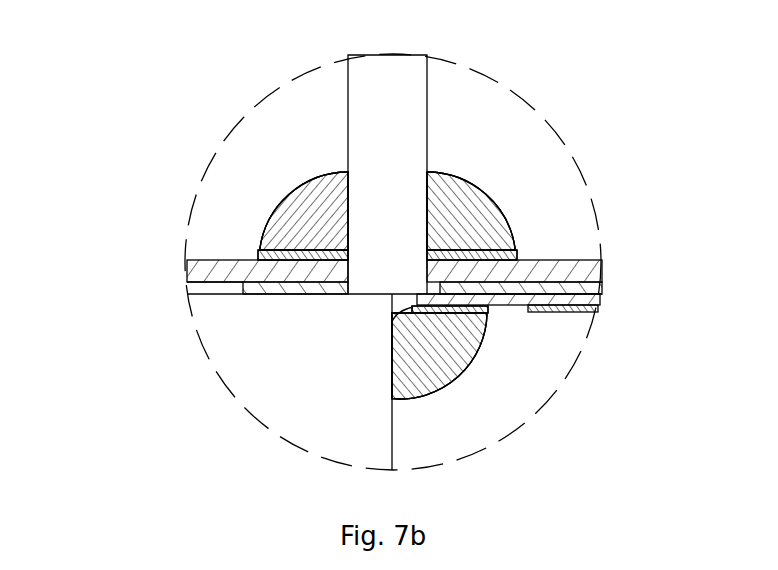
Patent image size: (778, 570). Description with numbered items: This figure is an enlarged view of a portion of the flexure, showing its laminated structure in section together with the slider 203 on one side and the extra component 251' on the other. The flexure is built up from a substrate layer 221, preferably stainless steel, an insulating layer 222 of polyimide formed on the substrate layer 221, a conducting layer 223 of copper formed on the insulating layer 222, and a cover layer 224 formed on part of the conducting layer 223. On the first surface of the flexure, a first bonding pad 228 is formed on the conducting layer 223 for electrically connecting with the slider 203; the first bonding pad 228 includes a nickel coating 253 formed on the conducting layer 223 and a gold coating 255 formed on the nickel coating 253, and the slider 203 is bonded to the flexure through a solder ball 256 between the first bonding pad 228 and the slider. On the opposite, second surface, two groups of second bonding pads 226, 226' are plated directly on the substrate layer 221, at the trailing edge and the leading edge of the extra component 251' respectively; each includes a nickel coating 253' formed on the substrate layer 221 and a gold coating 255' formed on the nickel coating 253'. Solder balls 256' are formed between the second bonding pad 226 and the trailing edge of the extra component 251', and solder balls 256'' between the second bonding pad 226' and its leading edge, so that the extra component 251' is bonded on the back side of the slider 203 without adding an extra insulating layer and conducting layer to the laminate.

The slider 203 is at (333, 418).
The extra component 251' is at (439, 153).
The substrate layer 221 is at (202, 277).
The insulating layer 222 is at (252, 291).
The conducting layer 223 is at (580, 297).
The cover layer 224 is at (580, 308).
The second bonding pad 226 is at (591, 202).
The second bonding pad 226' is at (184, 205).
The nickel coating 253' is at (389, 226).
The gold coating 255' is at (389, 198).
The solder ball 256' is at (518, 157).
The solder ball 256'' is at (251, 162).
The first bonding pad 228 is at (698, 353).
The nickel coating 253 is at (552, 340).
The gold coating 255 is at (542, 368).
The solder ball 256 is at (512, 387).